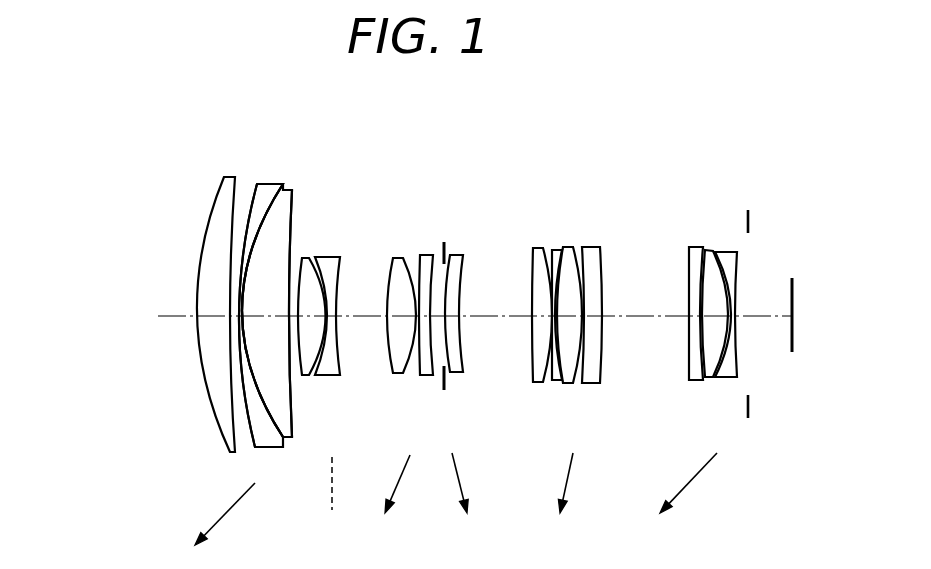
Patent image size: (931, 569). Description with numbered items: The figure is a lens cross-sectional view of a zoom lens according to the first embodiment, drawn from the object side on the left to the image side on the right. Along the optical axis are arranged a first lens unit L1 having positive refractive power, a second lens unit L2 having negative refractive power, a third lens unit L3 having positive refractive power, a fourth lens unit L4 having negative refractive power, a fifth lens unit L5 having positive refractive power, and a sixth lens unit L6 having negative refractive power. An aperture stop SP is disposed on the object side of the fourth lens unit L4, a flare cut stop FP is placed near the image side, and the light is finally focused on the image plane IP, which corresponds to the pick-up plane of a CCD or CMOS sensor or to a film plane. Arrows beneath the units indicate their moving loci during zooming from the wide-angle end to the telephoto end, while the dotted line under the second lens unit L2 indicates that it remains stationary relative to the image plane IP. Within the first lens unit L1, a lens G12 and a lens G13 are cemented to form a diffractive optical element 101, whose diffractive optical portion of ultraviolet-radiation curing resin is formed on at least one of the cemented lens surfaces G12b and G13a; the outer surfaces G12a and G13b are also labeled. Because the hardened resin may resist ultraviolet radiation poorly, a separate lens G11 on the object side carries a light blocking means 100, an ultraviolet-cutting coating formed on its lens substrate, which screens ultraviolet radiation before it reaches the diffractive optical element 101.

The light blocking means 100 is at (213, 267).
The diffractive optical element 101 is at (226, 268).
The lens G11 is at (223, 178).
The lens G12 is at (267, 184).
The lens G13 is at (280, 222).
The lens surface G12a is at (250, 430).
The lens surface G12b is at (265, 407).
The lens surface G13a is at (262, 310).
The lens surface G13b is at (329, 313).
The aperture stop SP is at (445, 241).
The flare cut stop FP is at (746, 218).
The image plane IP is at (789, 295).
The first lens unit L1 is at (226, 314).
The second lens unit L2 is at (347, 425).
The third lens unit L3 is at (430, 425).
The fourth lens unit L4 is at (445, 425).
The fifth lens unit L5 is at (606, 425).
The sixth lens unit L6 is at (734, 425).